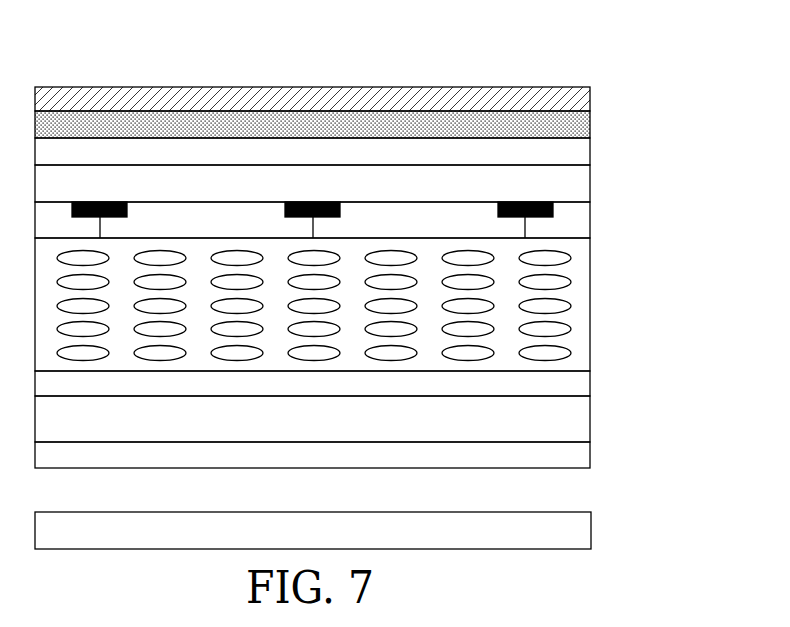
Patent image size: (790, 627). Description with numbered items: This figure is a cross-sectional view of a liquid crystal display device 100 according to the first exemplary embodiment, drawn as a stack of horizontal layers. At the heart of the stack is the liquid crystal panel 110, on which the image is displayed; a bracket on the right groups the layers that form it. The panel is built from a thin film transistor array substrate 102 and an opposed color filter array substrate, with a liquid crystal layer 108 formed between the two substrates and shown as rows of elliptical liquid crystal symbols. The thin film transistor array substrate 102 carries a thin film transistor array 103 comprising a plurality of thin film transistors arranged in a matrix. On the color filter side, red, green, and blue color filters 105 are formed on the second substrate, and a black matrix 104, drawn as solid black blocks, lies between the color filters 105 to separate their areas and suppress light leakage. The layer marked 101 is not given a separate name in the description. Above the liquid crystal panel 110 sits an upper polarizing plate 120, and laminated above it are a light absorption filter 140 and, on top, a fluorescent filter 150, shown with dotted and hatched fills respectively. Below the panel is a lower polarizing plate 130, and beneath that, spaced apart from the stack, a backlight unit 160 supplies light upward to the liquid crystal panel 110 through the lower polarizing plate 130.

The liquid crystal display device 100 is at (603, 65).
The substrate 101 is at (590, 423).
The thin film transistor array substrate 102 is at (590, 183).
The thin film transistor array 103 is at (590, 385).
The black matrix 104 is at (553, 210).
The color filters 105 is at (590, 230).
The liquid crystal layer 108 is at (590, 307).
The liquid crystal panel 110 is at (667, 173).
The upper polarizing plate 120 is at (590, 153).
The lower polarizing plate 130 is at (590, 453).
The light absorption filter 140 is at (590, 125).
The fluorescent filter 150 is at (590, 98).
The backlight unit 160 is at (591, 528).